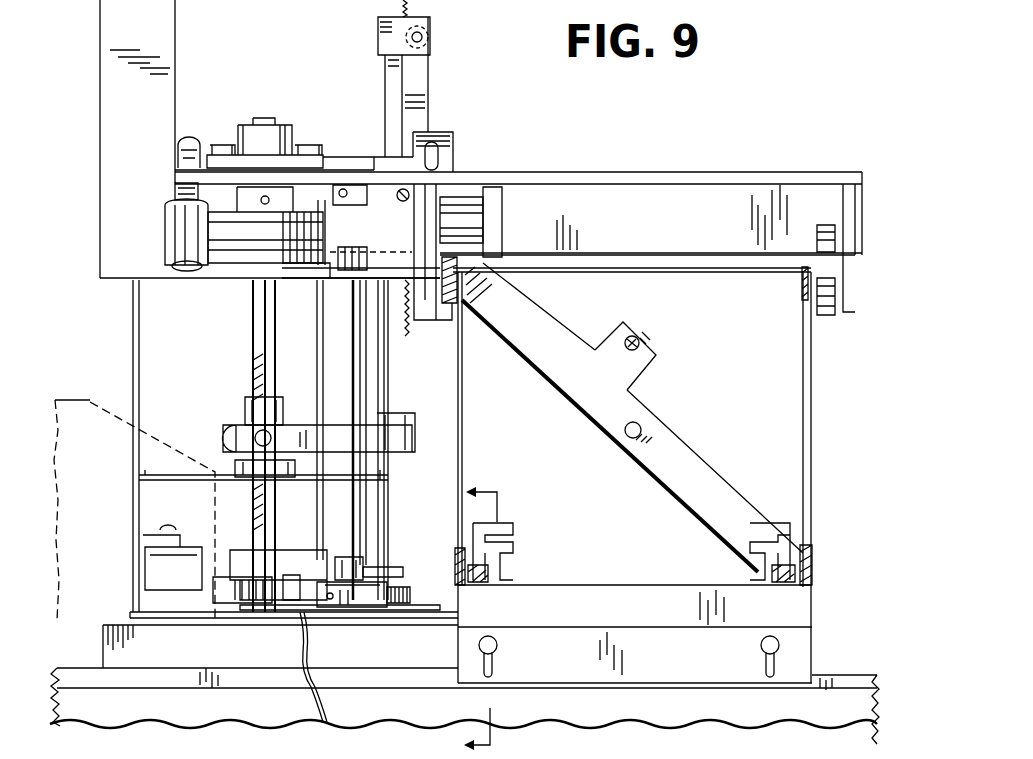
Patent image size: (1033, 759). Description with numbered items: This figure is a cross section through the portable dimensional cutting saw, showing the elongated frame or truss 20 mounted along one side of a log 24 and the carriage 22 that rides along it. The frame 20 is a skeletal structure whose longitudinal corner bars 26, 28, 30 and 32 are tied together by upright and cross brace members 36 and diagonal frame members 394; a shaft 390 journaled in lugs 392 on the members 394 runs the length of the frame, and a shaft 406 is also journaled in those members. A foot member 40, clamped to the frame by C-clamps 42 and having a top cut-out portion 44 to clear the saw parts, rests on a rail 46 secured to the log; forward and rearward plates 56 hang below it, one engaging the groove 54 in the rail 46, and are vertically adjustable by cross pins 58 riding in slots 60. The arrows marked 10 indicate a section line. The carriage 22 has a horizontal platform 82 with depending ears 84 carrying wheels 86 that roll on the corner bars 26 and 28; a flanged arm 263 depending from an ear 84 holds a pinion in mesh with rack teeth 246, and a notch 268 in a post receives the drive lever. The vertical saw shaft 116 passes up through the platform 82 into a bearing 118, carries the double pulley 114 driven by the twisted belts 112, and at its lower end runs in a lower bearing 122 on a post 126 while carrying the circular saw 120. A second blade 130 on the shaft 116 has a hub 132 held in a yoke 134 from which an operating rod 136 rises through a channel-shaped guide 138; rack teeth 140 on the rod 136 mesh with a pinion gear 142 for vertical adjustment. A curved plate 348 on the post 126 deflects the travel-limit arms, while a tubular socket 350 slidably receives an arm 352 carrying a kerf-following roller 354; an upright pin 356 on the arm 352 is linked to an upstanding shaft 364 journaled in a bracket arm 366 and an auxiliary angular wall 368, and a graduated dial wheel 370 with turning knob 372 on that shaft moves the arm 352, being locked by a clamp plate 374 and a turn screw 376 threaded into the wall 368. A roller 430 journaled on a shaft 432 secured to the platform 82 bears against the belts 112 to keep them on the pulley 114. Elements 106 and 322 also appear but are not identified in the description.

The apparatus 10 is at (496, 619).
The frame 20 is at (820, 460).
The carriage 22 is at (730, 168).
The log 24 is at (87, 400).
The corner bar 26 is at (800, 290).
The corner bar 28 is at (498, 268).
The corner bar 30 is at (812, 565).
The corner bar 32 is at (455, 558).
The upright and cross brace members 36 is at (586, 584).
The foot member 40 is at (633, 600).
The C-clamps 42 is at (748, 573).
The top cut-out portion 44 is at (110, 632).
The rail 46 is at (281, 705).
The groove 54 is at (86, 678).
The plates 56 is at (797, 634).
The cross pins 58 is at (782, 645).
The slots 60 is at (782, 664).
The platform 82 is at (580, 175).
The ears 84 is at (855, 300).
The wheels 86 is at (835, 282).
The side frame 106 is at (133, 370).
The drive belts 112 is at (258, 258).
The double pulley 114 is at (235, 250).
The saw shaft 116 is at (253, 354).
The bearing 118 is at (240, 128).
The circular saw 120 is at (163, 618).
The lower bearing 122 is at (255, 557).
The post 126 is at (386, 490).
The saw blade 130 is at (173, 476).
The hub 132 is at (282, 400).
The yoke 134 is at (310, 432).
The operating rod 136 is at (393, 106).
The guide 138 is at (418, 90).
The rack teeth 140 is at (427, 320).
The pinion gear 142 is at (430, 40).
The rack teeth 246 is at (452, 315).
The flanged arm 263 is at (432, 266).
The notch 268 is at (443, 157).
The housing 322 is at (166, 39).
The curved plate 348 is at (412, 588).
The tubular socket 350 is at (362, 606).
The arm 352 is at (404, 582).
The roller 354 is at (213, 593).
The pin 356 is at (373, 567).
The shaft 364 is at (347, 360).
The bracket arm 366 is at (388, 608).
The auxiliary angular wall 368 is at (173, 264).
The dial wheel 370 is at (298, 272).
The turning knob 372 is at (352, 252).
The clamp plate 374 is at (292, 280).
The turn screw 376 is at (328, 180).
The shaft 390 is at (652, 362).
The lugs 392 is at (645, 348).
The diagonal frame members 394 is at (540, 365).
The shaft 406 is at (626, 433).
The roller 430 is at (183, 250).
The shaft 432 is at (176, 186).